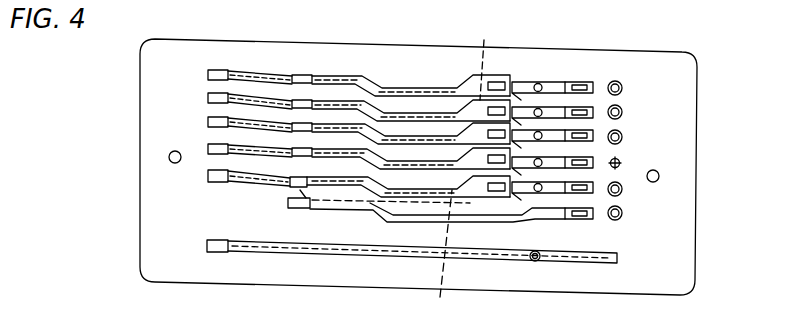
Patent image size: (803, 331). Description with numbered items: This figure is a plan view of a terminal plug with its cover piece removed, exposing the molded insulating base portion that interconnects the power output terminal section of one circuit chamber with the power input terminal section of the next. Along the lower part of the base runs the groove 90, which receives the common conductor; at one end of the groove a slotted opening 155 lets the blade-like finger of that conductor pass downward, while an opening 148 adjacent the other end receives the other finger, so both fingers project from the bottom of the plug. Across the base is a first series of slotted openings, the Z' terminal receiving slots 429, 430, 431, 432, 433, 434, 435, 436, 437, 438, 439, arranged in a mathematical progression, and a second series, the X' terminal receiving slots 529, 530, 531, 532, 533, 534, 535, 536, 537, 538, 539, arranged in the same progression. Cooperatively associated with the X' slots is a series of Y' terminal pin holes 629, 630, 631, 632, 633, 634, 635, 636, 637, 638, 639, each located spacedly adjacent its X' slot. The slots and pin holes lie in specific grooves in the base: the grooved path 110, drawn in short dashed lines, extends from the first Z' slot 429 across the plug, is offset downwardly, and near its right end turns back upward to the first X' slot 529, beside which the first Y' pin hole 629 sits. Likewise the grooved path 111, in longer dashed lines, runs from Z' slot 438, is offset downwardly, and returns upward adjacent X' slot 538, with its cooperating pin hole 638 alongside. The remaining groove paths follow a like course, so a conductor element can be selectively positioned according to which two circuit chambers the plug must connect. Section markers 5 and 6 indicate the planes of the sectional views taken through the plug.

The section line 5- 5 is at (137, 241).
The section line 6- 6 is at (137, 145).
The groove 90 is at (390, 258).
The grooved path 110 is at (443, 256).
The grooved path 111 is at (494, 57).
The opening 148 is at (536, 262).
The slotted opening 155 is at (218, 253).
The Z' terminal receiving slot 429 is at (208, 178).
The Z' terminal receiving slot 430 is at (208, 150).
The Z' terminal receiving slot 431 is at (208, 122).
The Z' terminal receiving slot 432 is at (208, 98).
The Z' terminal receiving slot 433 is at (208, 75).
The Z' terminal receiving slot 434 is at (300, 208).
The Z' terminal receiving slot 435 is at (290, 186).
The Z' terminal receiving slot 436 is at (283, 166).
The Z' terminal receiving slot 437 is at (290, 126).
The Z' terminal receiving slot 438 is at (297, 116).
The Z' terminal receiving slot 439 is at (305, 77).
The X' terminal receiving slot 529 is at (501, 194).
The X' terminal receiving slot 530 is at (482, 160).
The X' terminal receiving slot 531 is at (490, 133).
The X' terminal receiving slot 532 is at (507, 107).
The X' terminal receiving slot 533 is at (498, 83).
The X' terminal receiving slot 534 is at (594, 219).
The X' terminal receiving slot 535 is at (594, 192).
The X' terminal receiving slot 536 is at (594, 166).
The X' terminal receiving slot 537 is at (594, 131).
The X' terminal receiving slot 538 is at (594, 106).
The X' terminal receiving slot 539 is at (595, 83).
The Y' terminal pin hole 629 is at (541, 193).
The Y' terminal pin hole 630 is at (543, 167).
The Y' terminal pin hole 631 is at (536, 141).
The Y' terminal pin hole 632 is at (547, 108).
The Y' terminal pin hole 633 is at (543, 84).
The Y' terminal pin hole 634 is at (620, 216).
The Y' terminal pin hole 635 is at (620, 192).
The Y' terminal pin hole 636 is at (621, 163).
The Y' terminal pin hole 637 is at (621, 137).
The Y' terminal pin hole 638 is at (621, 112).
The Y' terminal pin hole 639 is at (621, 86).